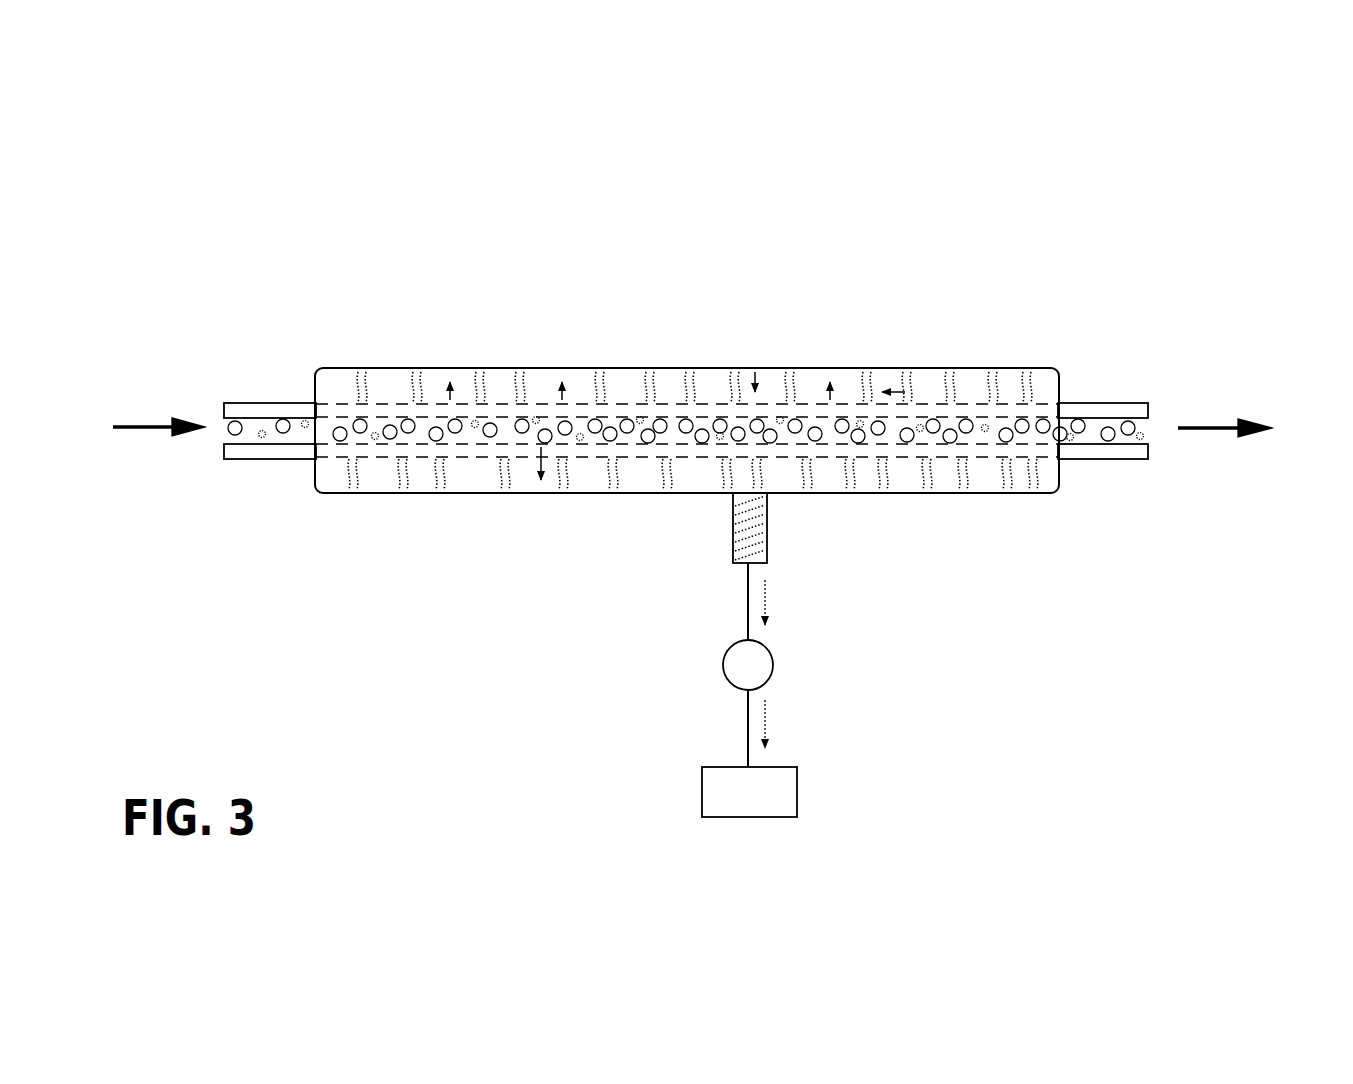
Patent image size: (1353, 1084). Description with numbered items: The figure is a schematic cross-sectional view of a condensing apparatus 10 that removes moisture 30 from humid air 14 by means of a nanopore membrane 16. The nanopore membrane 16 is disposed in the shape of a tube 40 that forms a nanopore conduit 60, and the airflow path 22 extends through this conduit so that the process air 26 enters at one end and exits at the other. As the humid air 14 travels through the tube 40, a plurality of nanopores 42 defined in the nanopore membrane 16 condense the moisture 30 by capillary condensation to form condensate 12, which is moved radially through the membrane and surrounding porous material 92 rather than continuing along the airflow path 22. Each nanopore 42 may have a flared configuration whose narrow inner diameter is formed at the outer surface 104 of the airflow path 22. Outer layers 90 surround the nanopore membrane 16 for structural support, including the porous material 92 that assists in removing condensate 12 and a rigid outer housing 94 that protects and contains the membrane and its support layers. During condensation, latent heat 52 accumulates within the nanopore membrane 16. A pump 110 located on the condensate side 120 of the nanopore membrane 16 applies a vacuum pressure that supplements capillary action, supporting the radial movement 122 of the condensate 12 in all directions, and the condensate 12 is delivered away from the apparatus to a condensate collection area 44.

The condensing apparatus 10 is at (612, 246).
The condensate 12 is at (758, 523).
The humid air 14 is at (150, 430).
The nanopore membrane 16 is at (345, 408).
The airflow path 22 is at (755, 372).
The process air 26 is at (1212, 410).
The moisture 30 is at (172, 400).
The tube 40 is at (313, 461).
The nanopores 42 is at (415, 402).
The condensate collection area 44 is at (700, 786).
The latent heat 52 is at (935, 385).
The nanopore conduit 60 is at (1040, 412).
The outer layers 90 is at (472, 465).
The porous material 92 is at (662, 392).
The rigid outer housing 94 is at (795, 390).
The outer surface 104 is at (958, 430).
The pump 110 is at (722, 666).
The condensate side 120 is at (728, 584).
The radial movement 122 is at (562, 398).